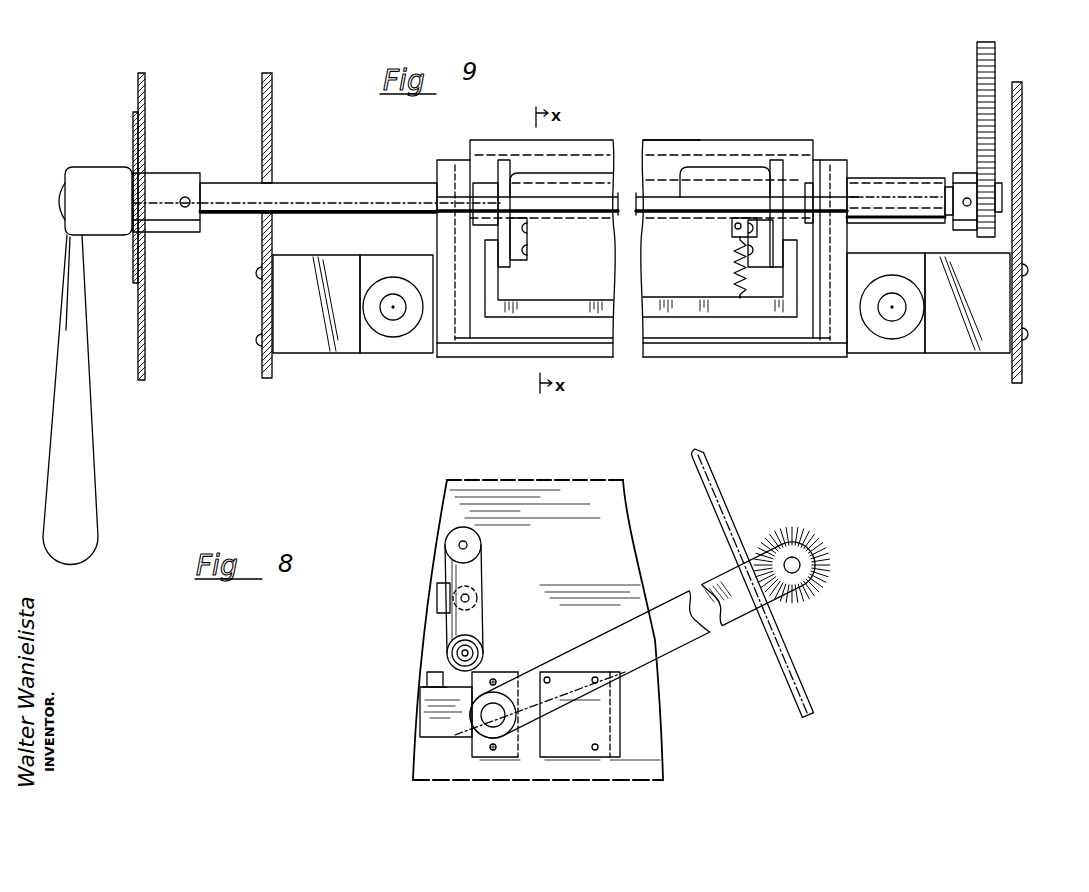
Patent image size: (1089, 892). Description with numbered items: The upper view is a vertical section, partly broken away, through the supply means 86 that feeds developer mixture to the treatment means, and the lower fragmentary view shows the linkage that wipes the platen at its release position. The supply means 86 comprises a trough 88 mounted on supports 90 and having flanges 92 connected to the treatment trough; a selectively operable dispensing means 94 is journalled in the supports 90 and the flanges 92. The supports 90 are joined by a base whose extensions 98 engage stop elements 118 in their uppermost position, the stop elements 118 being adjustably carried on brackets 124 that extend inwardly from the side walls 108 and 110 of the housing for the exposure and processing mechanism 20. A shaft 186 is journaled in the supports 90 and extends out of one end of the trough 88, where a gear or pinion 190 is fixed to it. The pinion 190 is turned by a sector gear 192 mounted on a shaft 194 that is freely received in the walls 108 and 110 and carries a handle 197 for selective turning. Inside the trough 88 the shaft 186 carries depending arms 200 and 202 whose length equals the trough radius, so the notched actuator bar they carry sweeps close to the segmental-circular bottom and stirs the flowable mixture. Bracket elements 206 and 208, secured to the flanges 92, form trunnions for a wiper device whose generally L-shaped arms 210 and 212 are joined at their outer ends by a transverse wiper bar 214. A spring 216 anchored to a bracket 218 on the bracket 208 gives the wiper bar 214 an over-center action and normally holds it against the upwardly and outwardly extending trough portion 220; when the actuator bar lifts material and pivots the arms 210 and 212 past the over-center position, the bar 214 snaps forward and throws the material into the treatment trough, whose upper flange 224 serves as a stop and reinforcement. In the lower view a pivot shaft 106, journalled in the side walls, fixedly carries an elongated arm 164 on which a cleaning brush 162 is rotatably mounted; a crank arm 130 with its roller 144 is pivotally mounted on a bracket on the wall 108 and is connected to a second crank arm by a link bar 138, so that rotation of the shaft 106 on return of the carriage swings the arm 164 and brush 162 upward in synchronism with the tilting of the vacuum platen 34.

In FIG. 9, the exposure and processing mechanism 20 is at (134, 329).
In FIG. 9, the side wall 108 is at (263, 112).
In FIG. 9, the shaft 194 is at (327, 188).
In FIG. 9, the handle 197 is at (82, 495).
In FIG. 9, the supports 90 is at (442, 162).
In FIG. 9, the depending arm 200 is at (477, 180).
In FIG. 9, the flanges 92 is at (550, 167).
In FIG. 9, the bracket element 206 is at (522, 247).
In FIG. 9, the arm 210 is at (495, 292).
In FIG. 9, the bracket 124 is at (308, 345).
In FIG. 9, the stop element 118 is at (387, 328).
In FIG. 9, the extension 98 is at (403, 345).
In FIG. 9, the supply means 86 is at (488, 346).
In FIG. 9, the upwardly and outwardly extending trough portion 220 is at (530, 333).
In FIG. 9, the upper flange 224 is at (658, 143).
In FIG. 9, the dispensing means 94 is at (662, 190).
In FIG. 9, the shaft 186 is at (697, 200).
In FIG. 9, the bracket element 208 is at (757, 222).
In FIG. 9, the depending arm 202 is at (837, 187).
In FIG. 9, the bracket 218 is at (732, 228).
In FIG. 9, the spring 216 is at (737, 262).
In FIG. 9, the arm 212 is at (789, 282).
In FIG. 9, the transverse wiper bar 214 is at (698, 317).
In FIG. 9, the trough 88 is at (727, 340).
In FIG. 9, the gear or pinion 190 is at (977, 173).
In FIG. 9, the sector gear 192 is at (995, 65).
In FIG. 9, the side wall 110 is at (1022, 153).
In FIG. 8, the roller 144 is at (481, 542).
In FIG. 8, the crank arm 130 is at (474, 583).
In FIG. 8, the link bar 138 is at (437, 600).
In FIG. 8, the pivot shaft 106 is at (490, 717).
In FIG. 8, the vacuum platen 34 is at (720, 503).
In FIG. 8, the cleaning brush 162 is at (800, 530).
In FIG. 8, the elongated arm 164 is at (707, 640).